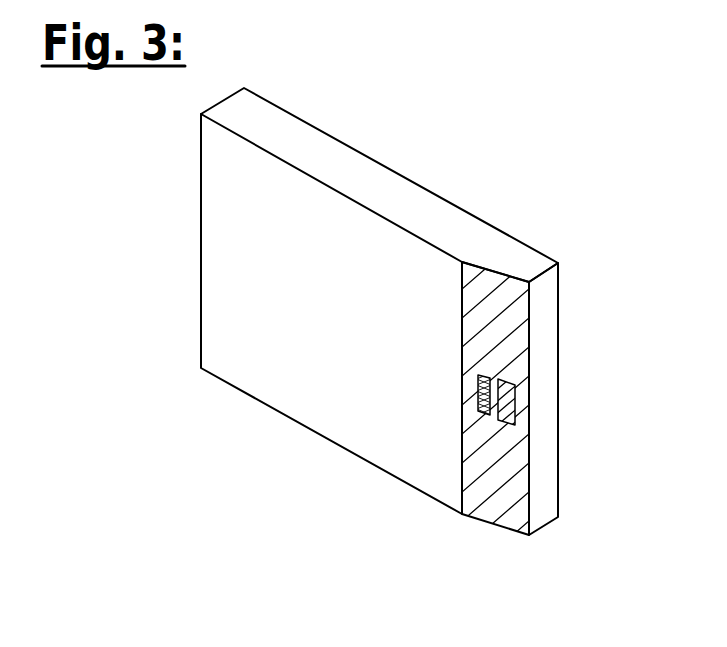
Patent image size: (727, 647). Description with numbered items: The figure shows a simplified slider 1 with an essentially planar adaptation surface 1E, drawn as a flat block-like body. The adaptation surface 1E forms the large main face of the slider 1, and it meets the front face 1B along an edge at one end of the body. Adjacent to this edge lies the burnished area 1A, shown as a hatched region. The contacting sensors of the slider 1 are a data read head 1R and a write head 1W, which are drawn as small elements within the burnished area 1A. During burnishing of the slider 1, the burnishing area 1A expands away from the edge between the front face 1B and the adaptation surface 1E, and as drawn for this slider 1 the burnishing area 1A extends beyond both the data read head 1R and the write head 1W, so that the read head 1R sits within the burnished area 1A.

The slider 1 is at (360, 183).
The burnished area 1A is at (478, 507).
The front face 1B is at (543, 367).
The adaptation surface 1E is at (267, 368).
The data read head 1R is at (486, 413).
The write head 1W is at (515, 390).